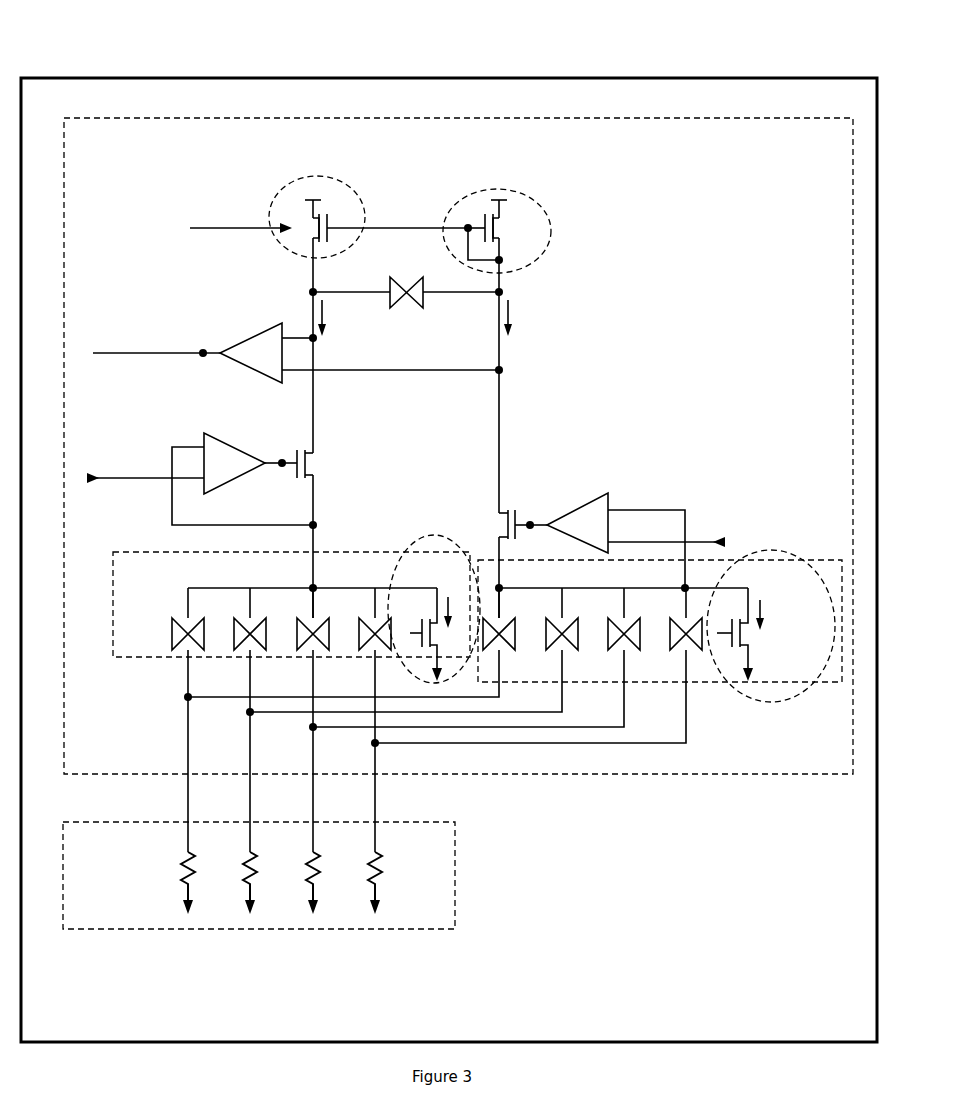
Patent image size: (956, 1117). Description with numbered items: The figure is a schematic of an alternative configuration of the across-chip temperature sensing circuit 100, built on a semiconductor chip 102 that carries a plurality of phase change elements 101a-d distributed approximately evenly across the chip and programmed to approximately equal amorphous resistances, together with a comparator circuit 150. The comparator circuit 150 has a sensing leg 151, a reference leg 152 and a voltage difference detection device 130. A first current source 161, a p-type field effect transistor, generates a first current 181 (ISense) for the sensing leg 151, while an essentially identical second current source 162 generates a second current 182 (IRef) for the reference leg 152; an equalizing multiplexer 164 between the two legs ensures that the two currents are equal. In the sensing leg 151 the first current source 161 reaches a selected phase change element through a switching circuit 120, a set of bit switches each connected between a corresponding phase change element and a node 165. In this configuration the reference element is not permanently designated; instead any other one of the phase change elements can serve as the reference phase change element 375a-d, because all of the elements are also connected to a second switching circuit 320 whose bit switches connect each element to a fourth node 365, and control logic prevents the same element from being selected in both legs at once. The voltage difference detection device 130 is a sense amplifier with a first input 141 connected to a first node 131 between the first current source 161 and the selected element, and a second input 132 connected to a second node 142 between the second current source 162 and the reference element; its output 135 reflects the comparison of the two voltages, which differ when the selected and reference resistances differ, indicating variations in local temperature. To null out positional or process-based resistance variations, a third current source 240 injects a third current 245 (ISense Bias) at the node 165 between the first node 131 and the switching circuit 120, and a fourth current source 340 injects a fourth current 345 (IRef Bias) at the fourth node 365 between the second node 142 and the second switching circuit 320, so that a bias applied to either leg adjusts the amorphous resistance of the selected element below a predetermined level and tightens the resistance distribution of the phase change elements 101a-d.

The across-chip temperature sensing circuit 100 is at (141, 45).
The semiconductor chip 102 is at (556, 77).
The comparator circuit 150 is at (452, 112).
The sensing leg 151 is at (318, 170).
The reference leg 152 is at (505, 165).
The first current source 161 is at (268, 220).
The second current source 162 is at (552, 232).
The equalizing multiplexer 164 is at (405, 277).
The first node 131 is at (297, 333).
The second input 132 is at (298, 372).
The comparator output 135 is at (204, 348).
The voltage difference detection device 130 is at (236, 360).
The first input 141 is at (313, 338).
The second node 142 is at (499, 370).
The first current 181 is at (376, 313).
The second current 182 is at (553, 313).
The node 165 is at (313, 588).
The switching circuit 120 is at (128, 658).
The third current source 240 is at (433, 537).
The third current 245 is at (432, 572).
The second switching circuit 320 is at (697, 682).
The fourth node 365 is at (500, 587).
The fourth current source 340 is at (777, 552).
The fourth current 345 is at (785, 587).
The phase change elements 101a-d is at (259, 906).
The reference phase change element 375a-d is at (292, 966).